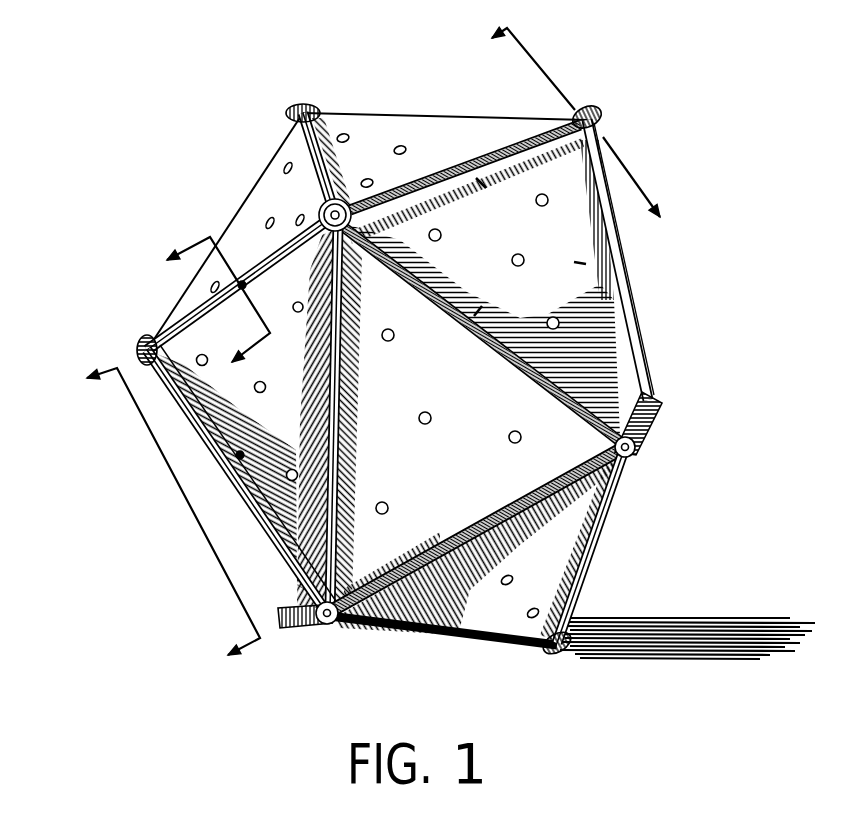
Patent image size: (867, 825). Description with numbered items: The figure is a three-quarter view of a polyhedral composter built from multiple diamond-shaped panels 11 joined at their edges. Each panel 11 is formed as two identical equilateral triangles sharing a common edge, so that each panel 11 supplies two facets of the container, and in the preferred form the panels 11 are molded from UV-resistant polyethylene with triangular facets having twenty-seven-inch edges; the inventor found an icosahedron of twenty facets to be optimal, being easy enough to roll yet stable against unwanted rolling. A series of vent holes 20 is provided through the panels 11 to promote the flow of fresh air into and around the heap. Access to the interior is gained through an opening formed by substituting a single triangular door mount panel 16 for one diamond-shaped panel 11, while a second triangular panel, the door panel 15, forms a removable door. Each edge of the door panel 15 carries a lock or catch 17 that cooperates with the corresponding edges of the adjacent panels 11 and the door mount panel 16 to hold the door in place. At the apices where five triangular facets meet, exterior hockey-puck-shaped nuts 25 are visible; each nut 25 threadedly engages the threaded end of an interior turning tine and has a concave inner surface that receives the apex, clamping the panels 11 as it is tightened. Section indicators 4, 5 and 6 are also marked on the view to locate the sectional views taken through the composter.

The panels 11 is at (395, 130).
The door panel 15 is at (610, 291).
The door mount panel 16 is at (461, 518).
The lock or catch 17 is at (481, 187).
The vent holes 20 is at (537, 203).
The nut 25 is at (306, 104).
The section line 4- 4 is at (208, 320).
The section line 5- 5 is at (160, 522).
The section line 6- 6 is at (564, 143).